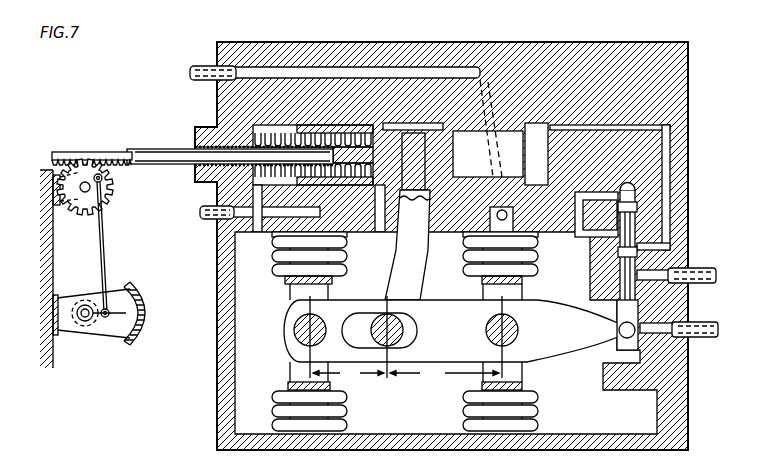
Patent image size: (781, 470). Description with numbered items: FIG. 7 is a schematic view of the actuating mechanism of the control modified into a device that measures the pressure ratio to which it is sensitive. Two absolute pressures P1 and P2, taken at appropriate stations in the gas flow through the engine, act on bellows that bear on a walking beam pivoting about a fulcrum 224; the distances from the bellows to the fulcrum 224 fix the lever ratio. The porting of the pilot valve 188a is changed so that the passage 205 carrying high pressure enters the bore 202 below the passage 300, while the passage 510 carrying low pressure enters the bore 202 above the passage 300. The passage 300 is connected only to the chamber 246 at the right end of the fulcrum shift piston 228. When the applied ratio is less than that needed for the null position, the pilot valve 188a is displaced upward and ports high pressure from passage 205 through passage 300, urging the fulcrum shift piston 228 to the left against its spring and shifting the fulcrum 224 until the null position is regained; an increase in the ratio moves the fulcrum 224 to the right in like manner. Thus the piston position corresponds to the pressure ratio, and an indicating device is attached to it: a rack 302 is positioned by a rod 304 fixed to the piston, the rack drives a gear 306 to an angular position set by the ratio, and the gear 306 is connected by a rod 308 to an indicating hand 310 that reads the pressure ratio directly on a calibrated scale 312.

The passage 300 is at (668, 143).
The rack 302 is at (66, 151).
The rod 304 is at (173, 147).
The gear 306 is at (85, 202).
The rod 308 is at (105, 258).
The indicating hand 310 is at (101, 332).
The calibrated scale 312 is at (142, 336).
The fulcrum shift piston 228 is at (388, 229).
The fulcrum 224 is at (395, 333).
The chamber 246 is at (513, 163).
The passage 510 is at (591, 246).
The bore 202 is at (618, 285).
The passage 205 is at (660, 278).
The pilot valve 188a is at (622, 338).
The absolute pressure P1 is at (190, 74).
The absolute pressure P2 is at (204, 215).